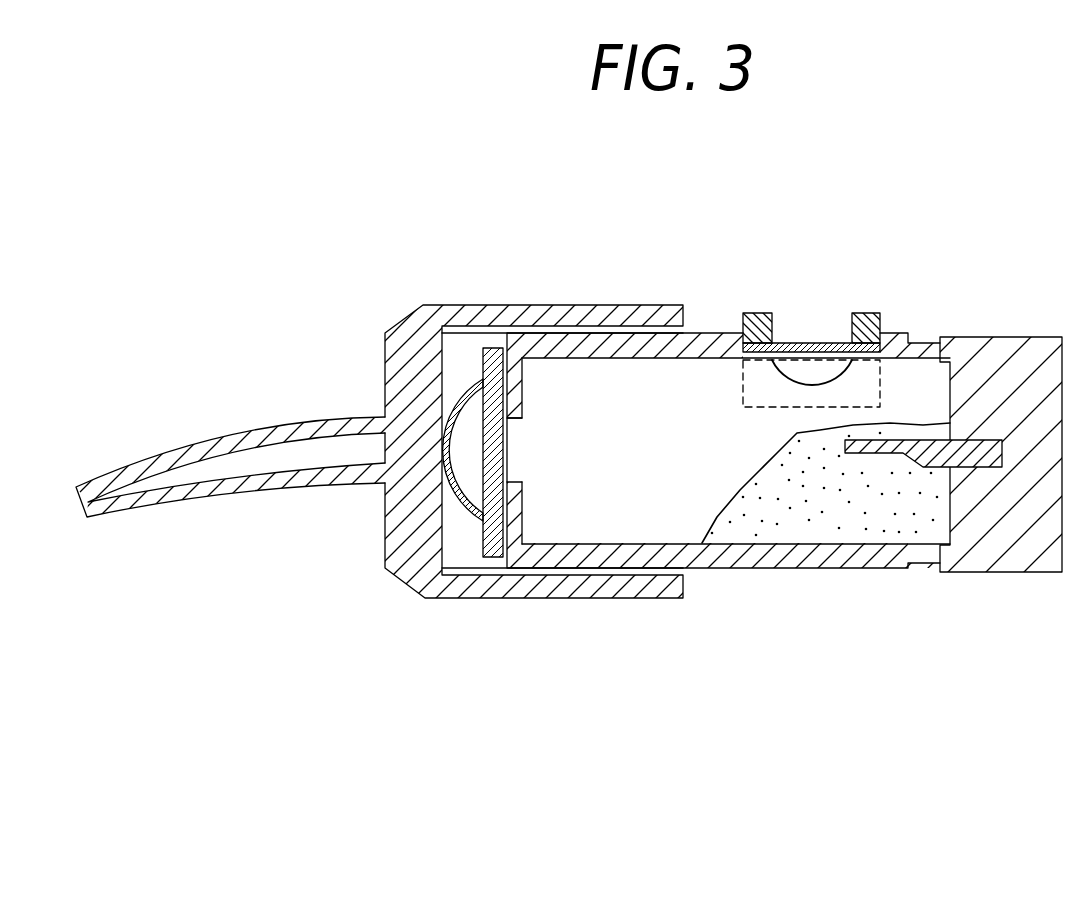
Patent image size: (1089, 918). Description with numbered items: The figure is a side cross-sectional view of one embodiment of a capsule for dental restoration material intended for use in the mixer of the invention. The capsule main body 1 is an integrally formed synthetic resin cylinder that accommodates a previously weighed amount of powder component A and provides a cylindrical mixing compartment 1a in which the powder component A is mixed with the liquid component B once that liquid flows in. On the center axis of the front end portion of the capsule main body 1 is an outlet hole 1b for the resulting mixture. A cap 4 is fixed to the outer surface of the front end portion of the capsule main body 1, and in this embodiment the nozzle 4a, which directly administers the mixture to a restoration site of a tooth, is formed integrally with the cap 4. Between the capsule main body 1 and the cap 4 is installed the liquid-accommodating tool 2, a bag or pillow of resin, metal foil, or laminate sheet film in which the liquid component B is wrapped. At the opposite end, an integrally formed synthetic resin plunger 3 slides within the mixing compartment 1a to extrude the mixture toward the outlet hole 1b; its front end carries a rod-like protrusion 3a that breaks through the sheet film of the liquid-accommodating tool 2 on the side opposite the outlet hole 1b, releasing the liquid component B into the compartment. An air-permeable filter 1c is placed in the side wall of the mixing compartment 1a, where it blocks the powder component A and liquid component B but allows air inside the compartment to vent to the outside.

The capsule main body 1 is at (983, 333).
The mixing compartment 1a is at (707, 403).
The outlet hole 1b is at (517, 445).
The air-permeable filter 1c is at (817, 345).
The liquid-accommodating tool 2 is at (448, 512).
The plunger 3 is at (1023, 482).
The rod-like protrusion 3a is at (935, 467).
The cap 4 is at (405, 357).
The nozzle 4a is at (225, 437).
The powder component A is at (823, 507).
The liquid component B is at (475, 413).